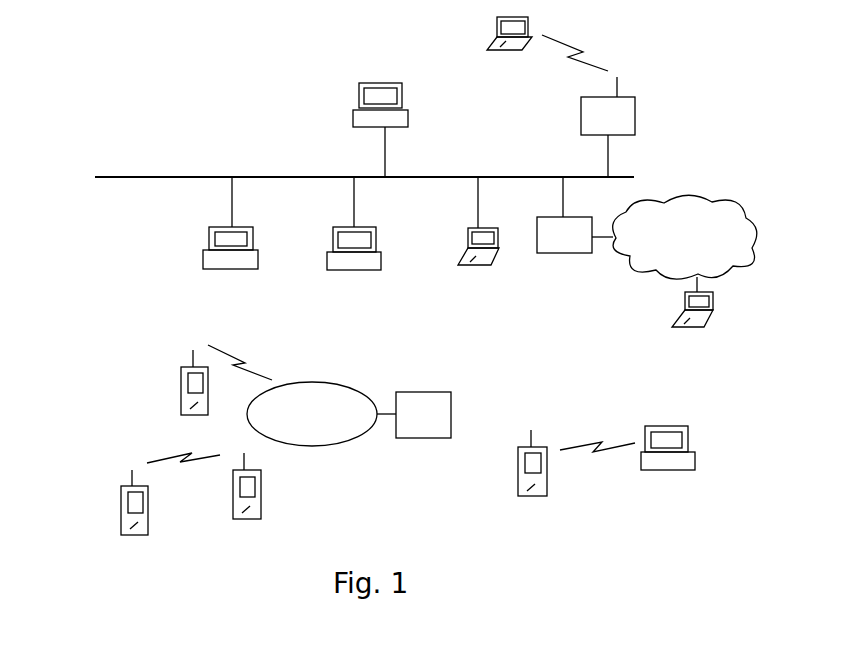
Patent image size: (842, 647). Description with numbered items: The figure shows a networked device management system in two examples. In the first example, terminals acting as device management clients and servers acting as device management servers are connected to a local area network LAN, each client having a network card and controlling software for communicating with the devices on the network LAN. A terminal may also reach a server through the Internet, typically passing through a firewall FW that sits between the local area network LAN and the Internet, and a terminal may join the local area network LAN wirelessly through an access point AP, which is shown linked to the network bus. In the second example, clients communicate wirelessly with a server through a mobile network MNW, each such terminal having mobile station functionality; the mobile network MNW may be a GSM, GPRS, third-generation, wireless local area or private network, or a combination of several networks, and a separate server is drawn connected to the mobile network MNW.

The local area network LAN is at (130, 178).
The access point AP is at (608, 127).
The firewall FW is at (575, 215).
The element Internet is at (685, 243).
The mobile network MNW is at (321, 414).